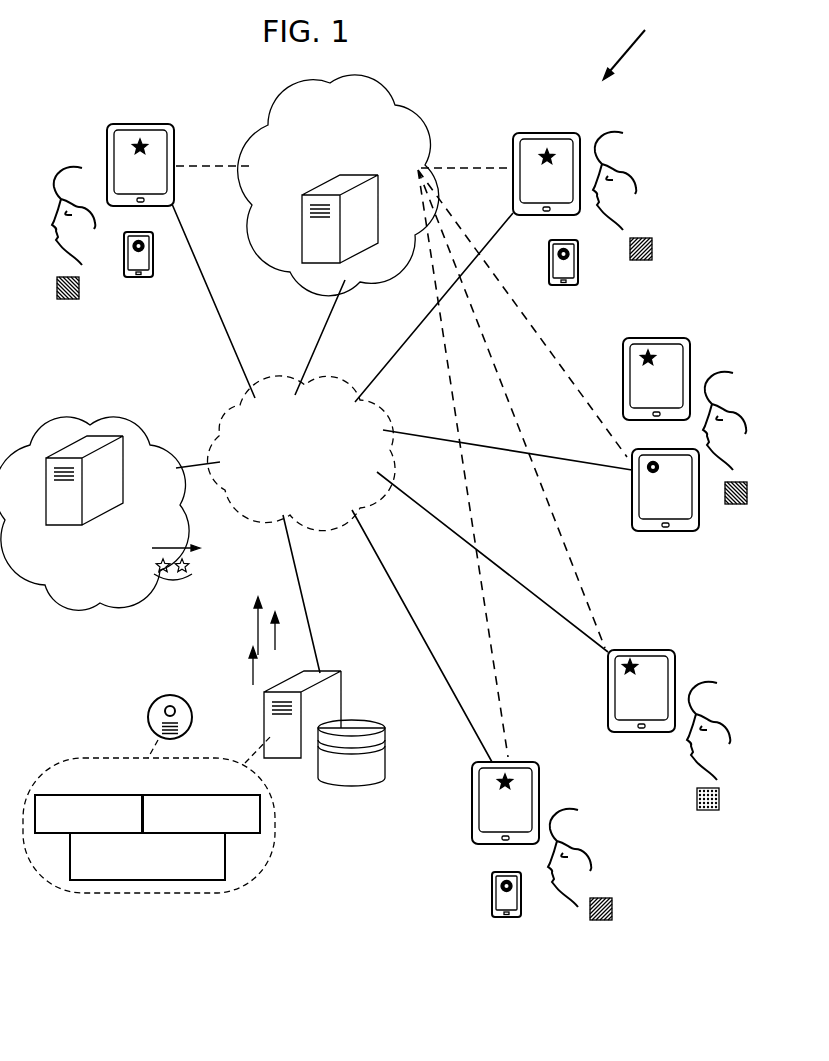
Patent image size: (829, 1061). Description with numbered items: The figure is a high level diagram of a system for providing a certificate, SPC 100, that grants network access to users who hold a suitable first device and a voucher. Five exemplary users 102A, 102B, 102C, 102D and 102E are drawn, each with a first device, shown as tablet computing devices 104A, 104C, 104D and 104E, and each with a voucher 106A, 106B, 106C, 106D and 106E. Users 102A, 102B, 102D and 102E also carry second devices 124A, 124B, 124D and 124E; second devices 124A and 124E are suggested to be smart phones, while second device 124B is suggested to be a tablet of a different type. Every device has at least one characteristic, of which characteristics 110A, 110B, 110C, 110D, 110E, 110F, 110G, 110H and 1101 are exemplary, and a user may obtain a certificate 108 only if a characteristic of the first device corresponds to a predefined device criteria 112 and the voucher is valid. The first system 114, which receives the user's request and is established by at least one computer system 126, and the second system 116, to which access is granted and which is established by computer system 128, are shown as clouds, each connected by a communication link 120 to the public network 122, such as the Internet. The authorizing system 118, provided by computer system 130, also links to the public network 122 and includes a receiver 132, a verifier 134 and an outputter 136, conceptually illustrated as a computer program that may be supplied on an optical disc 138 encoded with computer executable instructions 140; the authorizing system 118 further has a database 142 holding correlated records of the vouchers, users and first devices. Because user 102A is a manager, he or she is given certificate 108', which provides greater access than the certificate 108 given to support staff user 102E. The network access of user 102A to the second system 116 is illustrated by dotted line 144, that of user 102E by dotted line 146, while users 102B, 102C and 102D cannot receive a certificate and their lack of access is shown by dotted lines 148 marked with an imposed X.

The system for providing a certificate (SPC) 100 is at (635, 46).
The user 102A is at (627, 131).
The user 102B is at (735, 372).
The user 102C is at (712, 683).
The user 102D is at (576, 809).
The user 102E is at (50, 163).
The first device 104A is at (563, 198).
The first device 104C is at (658, 715).
The first device 104D is at (522, 827).
The first device 104E is at (124, 189).
The voucher 106A is at (653, 247).
The voucher 106B is at (747, 492).
The voucher 106C is at (720, 798).
The voucher 106D is at (614, 904).
The voucher 106E is at (57, 292).
The certificate 108 is at (267, 626).
The certificate 108' is at (239, 666).
The characteristic 110A is at (547, 150).
The characteristic 110B is at (648, 351).
The characteristic 110C is at (631, 659).
The characteristic 110D is at (508, 777).
The characteristic 110E is at (140, 139).
The characteristic 110F is at (133, 250).
The characteristic 110G is at (560, 252).
The characteristic 110H is at (652, 472).
The characteristic 1101 is at (497, 890).
The device criteria 112 is at (176, 576).
The first system 114 is at (72, 396).
The second system 116 is at (388, 110).
The authorizing system 118 is at (337, 728).
The communication link 120 is at (237, 350).
The public network 122 is at (320, 491).
The second device 124A is at (578, 280).
The second device 124B is at (649, 514).
The second device 124D is at (518, 912).
The second device 124E is at (146, 278).
The computer system 126 is at (115, 503).
The computer system 128 is at (375, 235).
The computer system 130 is at (340, 721).
The receiver 132 is at (55, 805).
The verifier 134 is at (152, 803).
The outputter 136 is at (213, 862).
The optical disc 138 is at (155, 719).
The computer executable instructions 140 is at (176, 729).
The database 142 is at (377, 775).
The dotted line 144 is at (470, 166).
The dotted line 146 is at (218, 172).
The dotted lines 148 is at (578, 396).